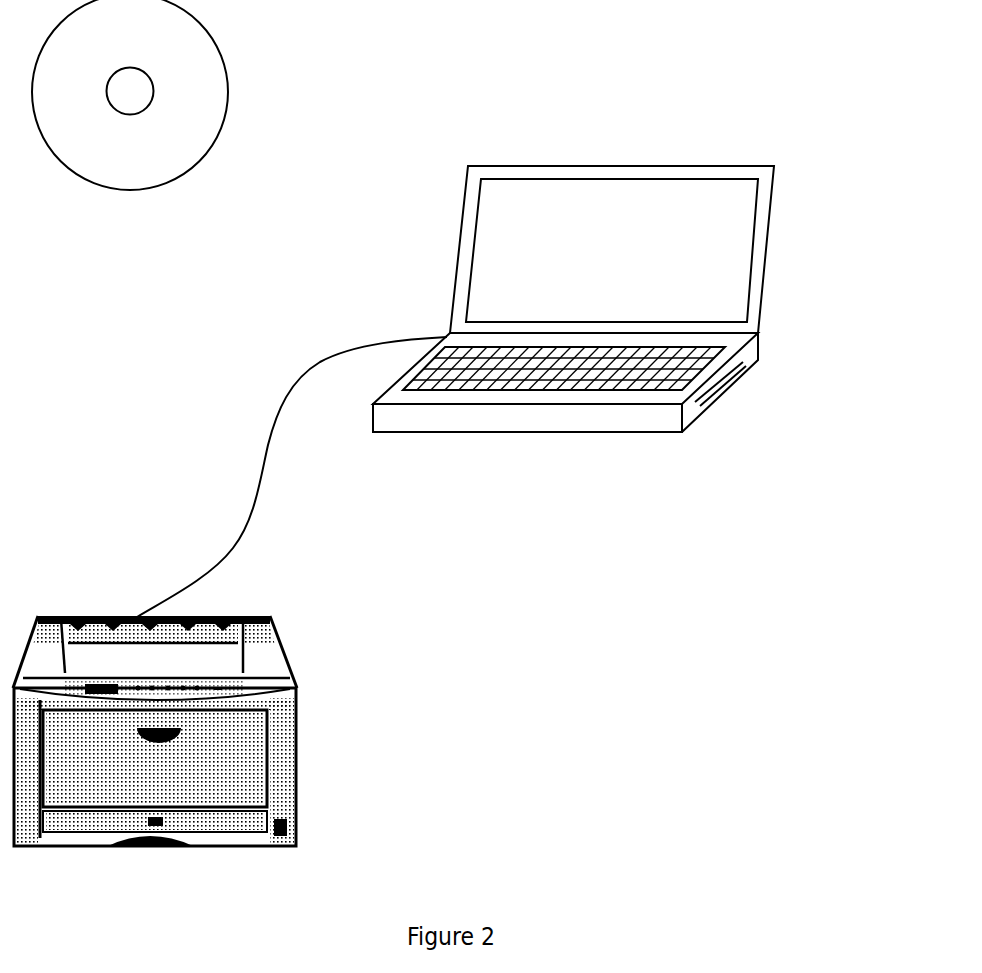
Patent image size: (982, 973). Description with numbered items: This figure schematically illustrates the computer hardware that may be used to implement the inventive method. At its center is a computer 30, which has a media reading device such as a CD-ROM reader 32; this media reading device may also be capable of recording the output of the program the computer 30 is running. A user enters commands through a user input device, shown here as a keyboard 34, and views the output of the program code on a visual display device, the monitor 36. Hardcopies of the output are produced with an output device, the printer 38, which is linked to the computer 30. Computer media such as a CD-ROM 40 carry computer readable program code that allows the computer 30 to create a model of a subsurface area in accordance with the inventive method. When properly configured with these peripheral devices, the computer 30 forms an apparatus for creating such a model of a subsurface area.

The computer 30 is at (639, 299).
The CD-ROM reader 32 is at (716, 386).
The keyboard 34 is at (550, 392).
The monitor 36 is at (628, 202).
The printer 38 is at (298, 758).
The CD-ROM 40 is at (210, 25).